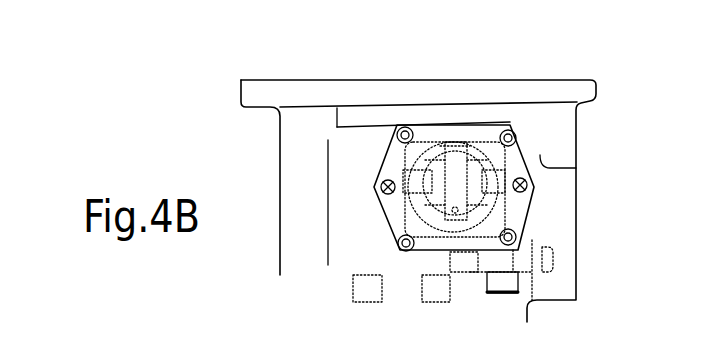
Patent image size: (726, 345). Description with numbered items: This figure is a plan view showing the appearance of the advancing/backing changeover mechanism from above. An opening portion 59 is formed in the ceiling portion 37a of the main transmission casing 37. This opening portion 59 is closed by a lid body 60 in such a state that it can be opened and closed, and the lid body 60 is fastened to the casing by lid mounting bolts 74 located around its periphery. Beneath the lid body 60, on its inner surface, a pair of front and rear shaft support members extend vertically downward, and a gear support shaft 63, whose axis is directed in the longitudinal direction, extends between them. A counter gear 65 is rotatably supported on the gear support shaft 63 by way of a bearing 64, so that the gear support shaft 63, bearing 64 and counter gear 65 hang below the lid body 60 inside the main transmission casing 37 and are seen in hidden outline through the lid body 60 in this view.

The main transmission casing 37 is at (596, 128).
The ceiling portion 37a is at (343, 153).
The opening portion 59 is at (413, 226).
The lid body 60 is at (518, 208).
The gear support shaft 63 is at (453, 203).
The bearing 64 is at (488, 170).
The counter gear 65 is at (422, 150).
The lid mounting bolt 74 is at (511, 130).